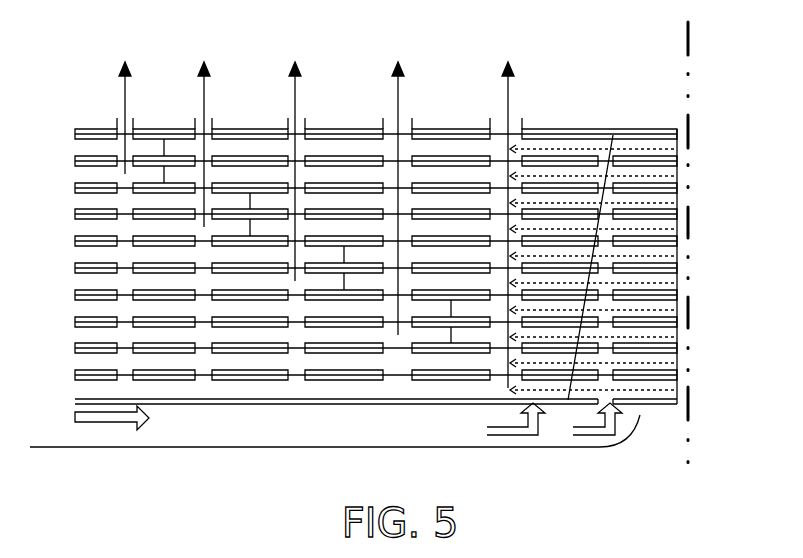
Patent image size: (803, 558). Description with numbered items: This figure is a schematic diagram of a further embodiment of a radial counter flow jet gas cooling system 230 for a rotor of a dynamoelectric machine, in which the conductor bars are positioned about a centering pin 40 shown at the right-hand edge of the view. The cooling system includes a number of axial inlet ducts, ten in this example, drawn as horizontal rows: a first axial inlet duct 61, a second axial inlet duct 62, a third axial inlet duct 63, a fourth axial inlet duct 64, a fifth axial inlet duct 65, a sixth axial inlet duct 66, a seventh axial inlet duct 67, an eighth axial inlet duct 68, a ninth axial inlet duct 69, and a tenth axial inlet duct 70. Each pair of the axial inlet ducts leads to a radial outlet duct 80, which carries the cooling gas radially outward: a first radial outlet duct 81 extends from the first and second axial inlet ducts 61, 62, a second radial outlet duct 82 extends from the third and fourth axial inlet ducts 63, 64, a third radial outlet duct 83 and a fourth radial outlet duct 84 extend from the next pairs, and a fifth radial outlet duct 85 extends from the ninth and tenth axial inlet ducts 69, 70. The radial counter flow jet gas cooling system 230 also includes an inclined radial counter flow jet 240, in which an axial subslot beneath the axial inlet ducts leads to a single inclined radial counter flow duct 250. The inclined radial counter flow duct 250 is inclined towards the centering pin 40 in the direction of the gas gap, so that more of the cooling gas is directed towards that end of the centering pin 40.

The centering pin 40 is at (688, 33).
The first axial inlet duct 61 is at (508, 388).
The second axial inlet duct 62 is at (508, 361).
The third axial inlet duct 63 is at (398, 335).
The fourth axial inlet duct 64 is at (398, 308).
The fifth axial inlet duct 65 is at (295, 281).
The sixth axial inlet duct 66 is at (295, 254).
The seventh axial inlet duct 67 is at (204, 227).
The eighth axial inlet duct 68 is at (204, 201).
The ninth axial inlet duct 69 is at (125, 174).
The tenth axial inlet duct 70 is at (125, 147).
The radial outlet duct 80 is at (495, 406).
The first radial outlet duct 81 is at (508, 94).
The second radial outlet duct 82 is at (398, 94).
The third radial outlet duct 83 is at (295, 94).
The fourth radial outlet duct 84 is at (204, 94).
The fifth radial outlet duct 85 is at (125, 94).
The radial counter flow jet gas cooling system 230 is at (254, 440).
The inclined radial counter flow jet 240 is at (611, 455).
The inclined radial counter flow duct 250 is at (613, 135).